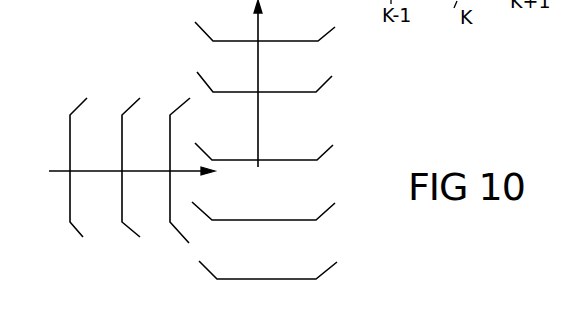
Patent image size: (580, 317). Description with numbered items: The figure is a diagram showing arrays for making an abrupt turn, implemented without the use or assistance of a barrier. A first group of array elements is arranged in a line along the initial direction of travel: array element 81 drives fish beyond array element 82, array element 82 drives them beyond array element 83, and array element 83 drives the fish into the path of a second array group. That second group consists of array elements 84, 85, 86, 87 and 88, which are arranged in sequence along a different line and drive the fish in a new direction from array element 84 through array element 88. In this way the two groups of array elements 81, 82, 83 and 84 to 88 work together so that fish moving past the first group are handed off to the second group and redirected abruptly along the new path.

The array element 81 is at (78, 229).
The array element 82 is at (133, 229).
The array element 83 is at (178, 243).
The array element 84 is at (333, 270).
The array element 85 is at (330, 211).
The array element 86 is at (326, 150).
The array element 87 is at (326, 84).
The array element 88 is at (195, 30).